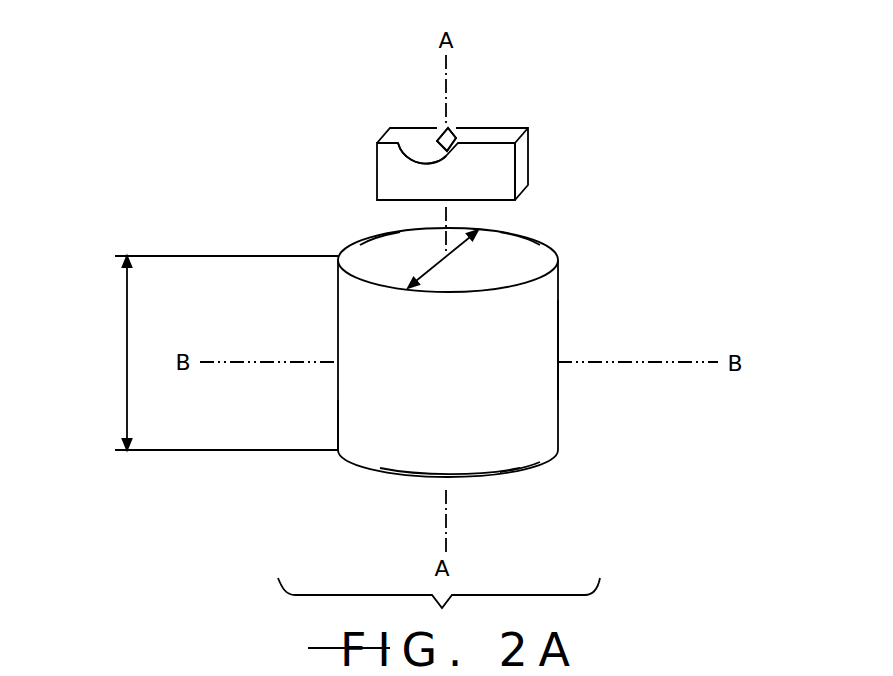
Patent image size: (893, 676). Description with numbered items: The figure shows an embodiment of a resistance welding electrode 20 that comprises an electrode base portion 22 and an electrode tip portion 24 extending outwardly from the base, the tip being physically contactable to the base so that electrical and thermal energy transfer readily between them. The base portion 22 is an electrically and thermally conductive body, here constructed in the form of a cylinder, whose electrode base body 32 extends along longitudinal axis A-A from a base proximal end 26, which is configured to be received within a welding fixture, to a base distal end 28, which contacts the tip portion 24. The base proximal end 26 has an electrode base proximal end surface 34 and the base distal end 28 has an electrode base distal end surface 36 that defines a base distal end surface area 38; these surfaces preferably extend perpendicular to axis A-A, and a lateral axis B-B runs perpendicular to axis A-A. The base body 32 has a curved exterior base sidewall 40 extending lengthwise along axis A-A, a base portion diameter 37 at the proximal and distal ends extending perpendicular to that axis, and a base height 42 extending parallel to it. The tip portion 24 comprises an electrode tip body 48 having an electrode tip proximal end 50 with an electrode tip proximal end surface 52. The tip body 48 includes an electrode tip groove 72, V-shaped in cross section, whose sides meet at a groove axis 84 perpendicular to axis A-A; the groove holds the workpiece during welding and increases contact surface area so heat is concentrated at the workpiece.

The resistance welding electrode 20 is at (600, 149).
The electrode base portion 22 is at (528, 396).
The electrode tip portion 24 is at (387, 172).
The base proximal end 26 is at (513, 470).
The base distal end 28 is at (542, 245).
The electrode base body 32 is at (530, 352).
The electrode base proximal end surface 34 is at (398, 474).
The electrode base distal end surface 36 is at (381, 260).
The base portion diameter 37 is at (433, 268).
The base distal end surface area 38 is at (501, 266).
The curved exterior base sidewall 40 is at (387, 417).
The base height 42 is at (127, 347).
The electrode tip body 48 is at (507, 153).
The electrode tip proximal end 50 is at (403, 201).
The electrode tip proximal end surface 52 is at (484, 208).
The electrode tip groove 72 is at (453, 133).
The groove axis 84 is at (440, 159).